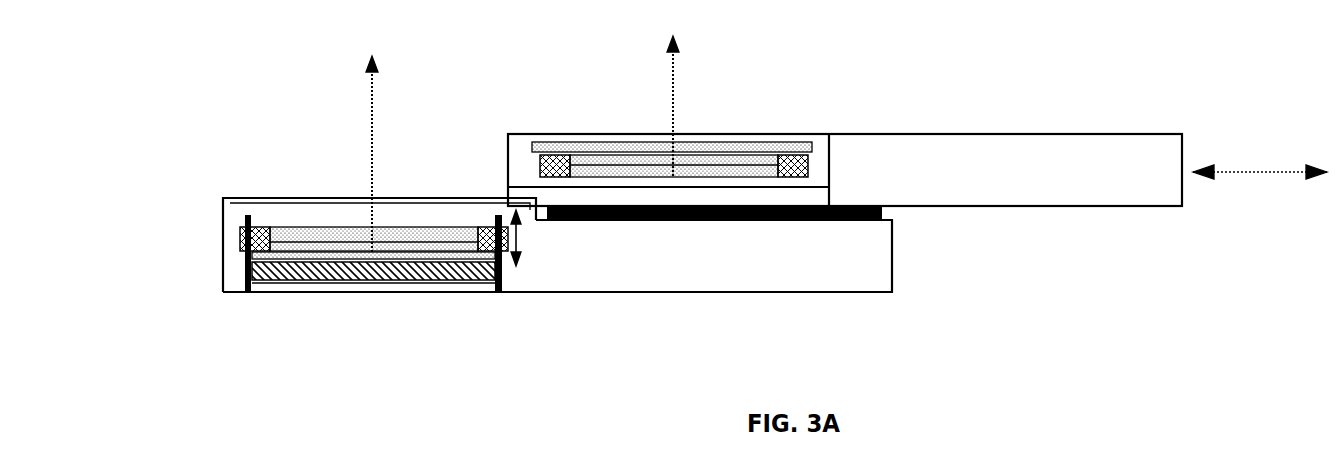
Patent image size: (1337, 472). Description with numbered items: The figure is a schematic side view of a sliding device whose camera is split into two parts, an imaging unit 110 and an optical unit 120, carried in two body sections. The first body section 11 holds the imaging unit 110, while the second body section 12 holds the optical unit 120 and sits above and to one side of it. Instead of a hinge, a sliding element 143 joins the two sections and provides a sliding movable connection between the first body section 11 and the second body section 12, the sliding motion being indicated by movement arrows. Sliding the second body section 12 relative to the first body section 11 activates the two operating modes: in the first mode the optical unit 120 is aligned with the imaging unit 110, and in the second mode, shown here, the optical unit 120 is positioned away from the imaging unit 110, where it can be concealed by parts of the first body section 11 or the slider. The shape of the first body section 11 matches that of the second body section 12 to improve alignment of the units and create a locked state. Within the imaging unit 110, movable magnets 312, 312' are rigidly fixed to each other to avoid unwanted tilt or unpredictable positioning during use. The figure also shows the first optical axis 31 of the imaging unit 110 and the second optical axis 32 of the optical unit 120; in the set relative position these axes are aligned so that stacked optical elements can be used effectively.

The first body section 11 is at (887, 293).
The second body section 12 is at (1157, 206).
The first optical axis 31 is at (373, 118).
The second optical axis 32 is at (674, 112).
The imaging unit 110 is at (236, 266).
The optical unit 120 is at (541, 140).
The sliding element 143 is at (882, 214).
The movable magnet 312 is at (374, 216).
The movable magnet 312' is at (571, 239).